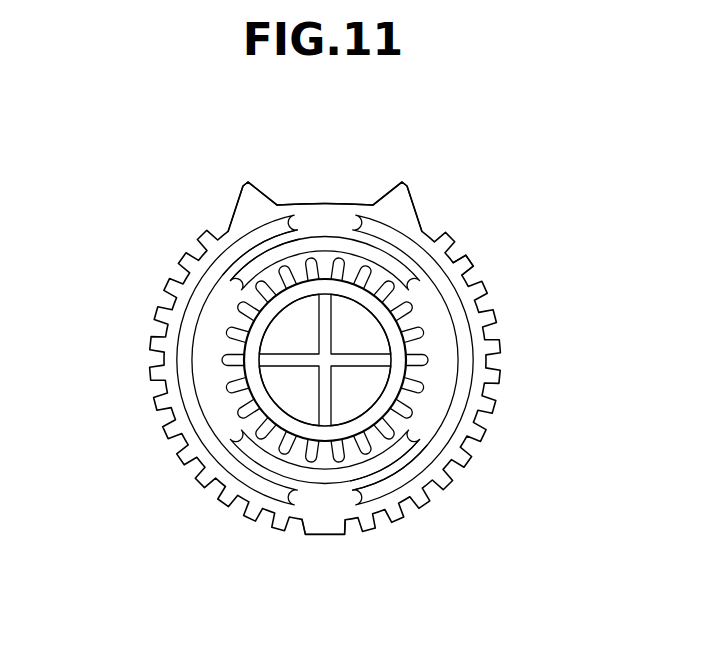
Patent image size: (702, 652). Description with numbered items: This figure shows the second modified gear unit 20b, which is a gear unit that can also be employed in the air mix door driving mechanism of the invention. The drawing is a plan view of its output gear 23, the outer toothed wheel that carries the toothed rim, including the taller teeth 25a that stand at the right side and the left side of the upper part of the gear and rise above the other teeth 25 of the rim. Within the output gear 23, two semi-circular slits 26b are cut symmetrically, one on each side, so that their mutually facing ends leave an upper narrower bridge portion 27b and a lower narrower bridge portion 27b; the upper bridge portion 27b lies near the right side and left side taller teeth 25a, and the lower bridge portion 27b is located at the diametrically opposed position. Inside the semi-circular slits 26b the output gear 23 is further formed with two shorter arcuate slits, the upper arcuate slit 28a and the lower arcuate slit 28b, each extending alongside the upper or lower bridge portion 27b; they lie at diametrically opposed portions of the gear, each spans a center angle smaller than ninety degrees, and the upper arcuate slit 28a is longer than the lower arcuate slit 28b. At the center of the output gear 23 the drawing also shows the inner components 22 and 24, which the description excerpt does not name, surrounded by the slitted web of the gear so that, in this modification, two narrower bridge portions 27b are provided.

The second modified gear unit 20b is at (120, 150).
The inner gear 22 is at (426, 351).
The output gear 23 is at (353, 204).
The hub 24 is at (420, 388).
The outer teeth 25 is at (474, 262).
The taller teeth 25a is at (221, 213).
The semi-circular slits 26b is at (193, 374).
The bridge portions 27b is at (323, 222).
The upper arcuate slit 28a is at (255, 262).
The lower arcuate slit 28b is at (372, 474).